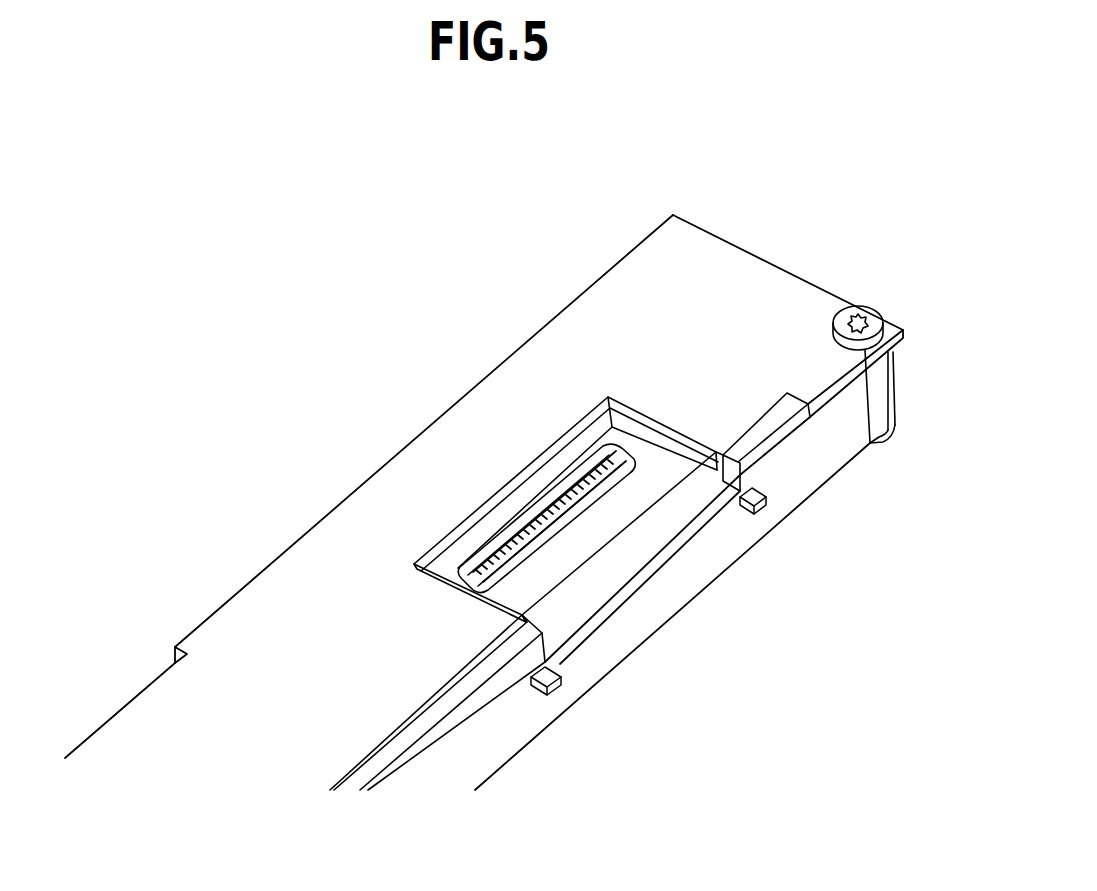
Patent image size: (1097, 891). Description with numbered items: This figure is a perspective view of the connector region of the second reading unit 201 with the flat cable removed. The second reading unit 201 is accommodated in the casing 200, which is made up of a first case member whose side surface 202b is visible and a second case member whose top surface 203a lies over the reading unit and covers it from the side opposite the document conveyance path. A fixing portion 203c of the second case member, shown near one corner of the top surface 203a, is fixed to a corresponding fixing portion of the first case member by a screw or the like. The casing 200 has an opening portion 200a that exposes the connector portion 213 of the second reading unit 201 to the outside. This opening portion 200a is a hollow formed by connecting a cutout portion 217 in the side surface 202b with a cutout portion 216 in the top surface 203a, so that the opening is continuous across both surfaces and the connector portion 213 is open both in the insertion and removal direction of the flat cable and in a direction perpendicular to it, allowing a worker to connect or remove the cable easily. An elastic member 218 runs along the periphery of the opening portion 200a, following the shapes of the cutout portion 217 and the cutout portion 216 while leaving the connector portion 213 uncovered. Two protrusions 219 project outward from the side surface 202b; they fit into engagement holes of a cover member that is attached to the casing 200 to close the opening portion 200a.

The casing 200 is at (614, 208).
The opening portion 200a is at (690, 408).
The second reading unit 201 is at (525, 582).
The side surface 202b is at (833, 457).
The top surface 203a is at (242, 607).
The fixing portion 203c is at (872, 313).
The connector portion 213 is at (535, 535).
The cutout portion 216 is at (565, 435).
The cutout portion 217 is at (603, 606).
The elastic member 218 is at (641, 437).
The protrusions 219 is at (759, 510).